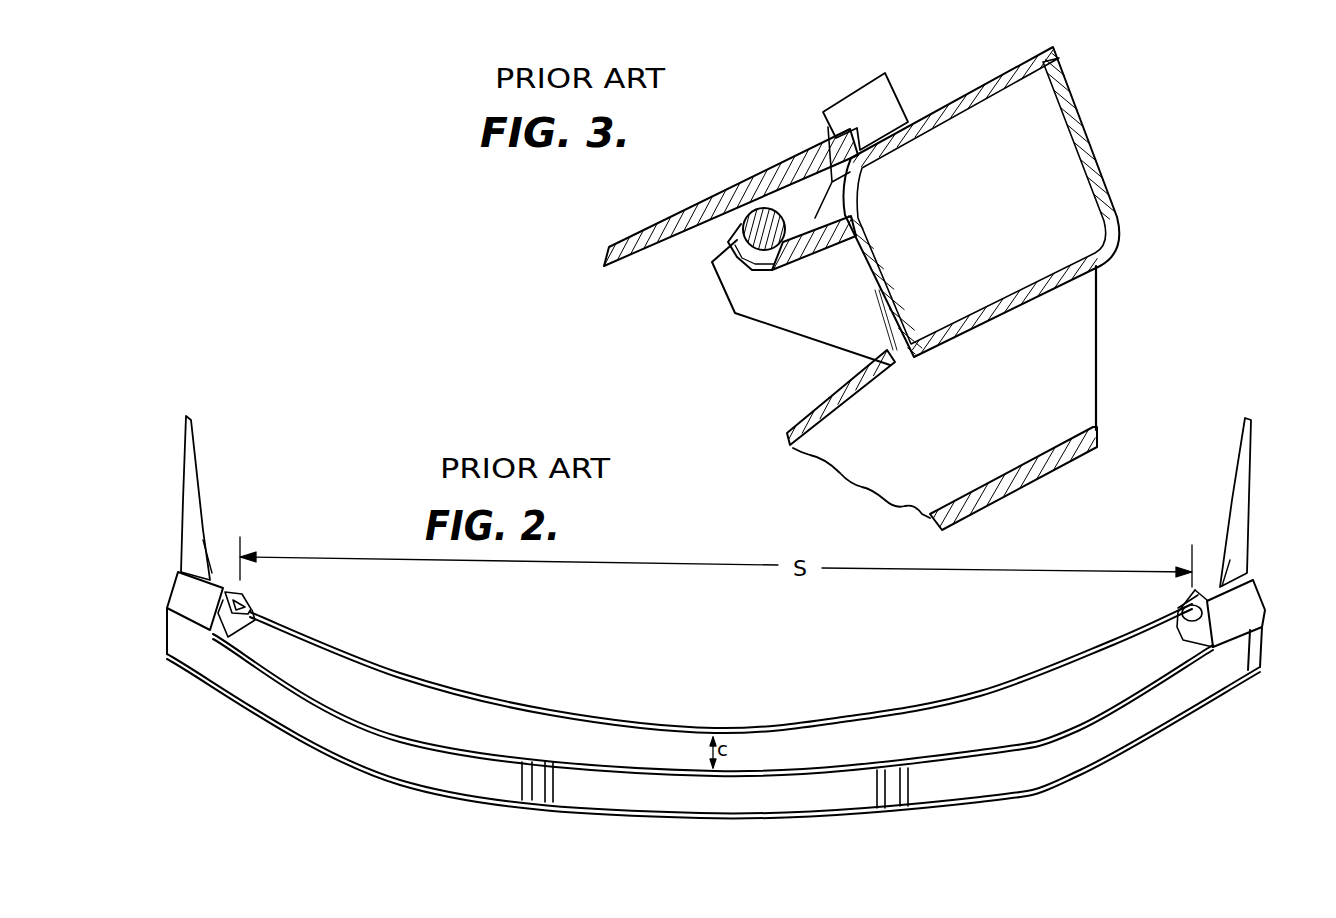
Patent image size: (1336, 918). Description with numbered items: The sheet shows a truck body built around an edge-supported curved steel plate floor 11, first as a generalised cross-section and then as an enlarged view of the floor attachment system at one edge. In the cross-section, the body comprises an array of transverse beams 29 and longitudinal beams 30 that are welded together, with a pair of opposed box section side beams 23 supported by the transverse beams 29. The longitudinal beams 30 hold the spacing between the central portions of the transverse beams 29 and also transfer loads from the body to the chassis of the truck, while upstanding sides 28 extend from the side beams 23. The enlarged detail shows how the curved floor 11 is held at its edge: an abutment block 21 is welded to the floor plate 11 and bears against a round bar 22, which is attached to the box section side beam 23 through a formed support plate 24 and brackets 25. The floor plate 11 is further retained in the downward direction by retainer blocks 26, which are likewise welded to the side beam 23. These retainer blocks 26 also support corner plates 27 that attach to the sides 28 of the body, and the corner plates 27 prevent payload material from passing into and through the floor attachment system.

In FIG. 3, the curved steel plate floor 11 is at (657, 248).
In FIG. 2, the curved steel plate floor 11 is at (995, 690).
In FIG. 3, the abutment block 21 is at (800, 197).
In FIG. 2, the abutment block 21 is at (243, 595).
In FIG. 3, the round bar 22 is at (747, 208).
In FIG. 2, the round bar 22 is at (1187, 637).
In FIG. 3, the box section side beam 23 is at (1073, 120).
In FIG. 2, the box section side beam 23 is at (197, 612).
In FIG. 3, the formed support plate 24 is at (737, 273).
In FIG. 3, the brackets 25 is at (810, 338).
In FIG. 3, the retainer blocks 26 is at (838, 105).
In FIG. 2, the corner plates 27 is at (212, 568).
In FIG. 2, the upstanding sides 28 is at (198, 480).
In FIG. 3, the transverse beams 29 is at (787, 436).
In FIG. 2, the transverse beams 29 is at (317, 749).
In FIG. 2, the longitudinal beams 30 is at (536, 785).